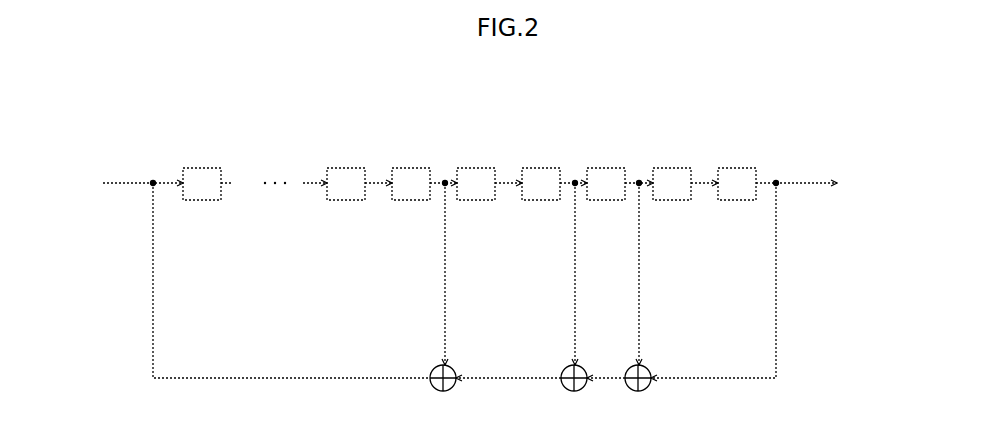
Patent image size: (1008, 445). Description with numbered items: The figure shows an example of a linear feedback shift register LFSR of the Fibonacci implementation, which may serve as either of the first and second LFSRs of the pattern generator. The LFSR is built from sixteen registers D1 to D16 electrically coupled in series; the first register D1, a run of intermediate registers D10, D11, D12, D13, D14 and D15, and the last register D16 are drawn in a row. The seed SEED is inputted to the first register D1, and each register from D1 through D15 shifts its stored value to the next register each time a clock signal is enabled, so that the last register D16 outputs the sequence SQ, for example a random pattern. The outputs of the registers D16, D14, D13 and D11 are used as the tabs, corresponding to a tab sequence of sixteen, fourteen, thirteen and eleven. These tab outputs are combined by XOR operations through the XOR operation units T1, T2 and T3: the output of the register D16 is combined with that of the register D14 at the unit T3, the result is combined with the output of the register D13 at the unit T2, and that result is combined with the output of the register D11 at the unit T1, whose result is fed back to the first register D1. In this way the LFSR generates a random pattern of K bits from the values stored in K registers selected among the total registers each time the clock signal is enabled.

The linear feedback shift register LFSR is at (99, 113).
The seed SEED is at (118, 184).
The sequence SQ is at (811, 184).
The first register D1 is at (208, 184).
The tenth register D10 is at (359, 184).
The eleventh register D11 is at (424, 184).
The twelfth register D12 is at (489, 184).
The thirteenth register D13 is at (554, 184).
The fourteenth register D14 is at (620, 184).
The fifteenth register D15 is at (685, 184).
The last register D16 is at (737, 184).
The XOR operation unit T1 is at (452, 369).
The XOR operation unit T2 is at (583, 369).
The XOR operation unit T3 is at (647, 369).